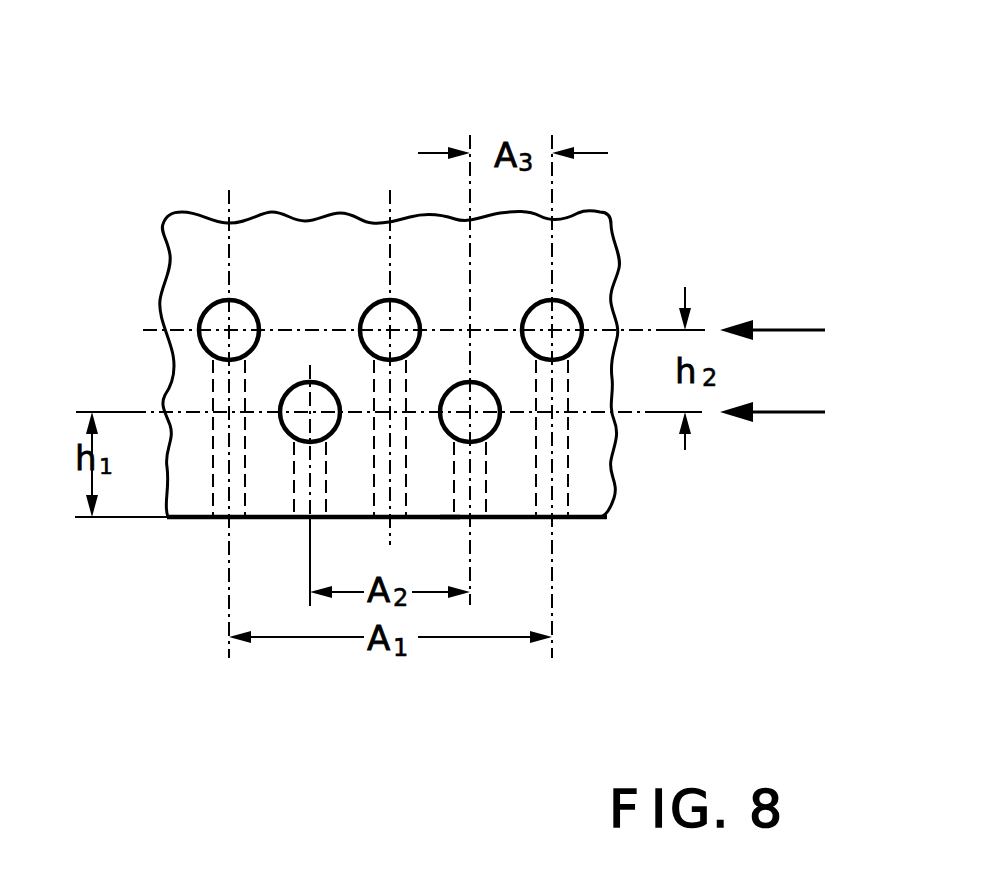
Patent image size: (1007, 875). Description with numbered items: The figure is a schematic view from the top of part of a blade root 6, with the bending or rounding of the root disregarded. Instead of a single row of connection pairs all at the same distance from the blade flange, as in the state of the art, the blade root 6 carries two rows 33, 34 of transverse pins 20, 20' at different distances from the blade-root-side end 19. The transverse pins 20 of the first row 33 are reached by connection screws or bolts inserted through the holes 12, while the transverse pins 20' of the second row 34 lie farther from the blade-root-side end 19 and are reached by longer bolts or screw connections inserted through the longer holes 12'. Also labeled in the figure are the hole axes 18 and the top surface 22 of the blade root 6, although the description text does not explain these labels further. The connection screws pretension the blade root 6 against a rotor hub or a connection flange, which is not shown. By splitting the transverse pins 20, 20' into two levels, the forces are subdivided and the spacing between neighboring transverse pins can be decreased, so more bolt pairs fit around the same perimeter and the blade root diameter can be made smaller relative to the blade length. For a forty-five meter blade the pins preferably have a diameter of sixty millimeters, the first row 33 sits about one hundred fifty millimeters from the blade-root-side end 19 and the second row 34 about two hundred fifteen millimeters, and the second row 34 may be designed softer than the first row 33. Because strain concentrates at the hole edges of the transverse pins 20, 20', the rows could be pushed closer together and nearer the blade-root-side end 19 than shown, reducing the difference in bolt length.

The blade root 6 is at (185, 172).
The hole 12 is at (401, 544).
The longer hole 12' is at (372, 510).
The hole axis 18 is at (375, 385).
The blade-root-side end 19 is at (447, 518).
The transverse pin 20 is at (376, 314).
The transverse pin 20' is at (479, 252).
The top surface 22 is at (513, 237).
The first row 33 is at (800, 412).
The second row 34 is at (803, 330).